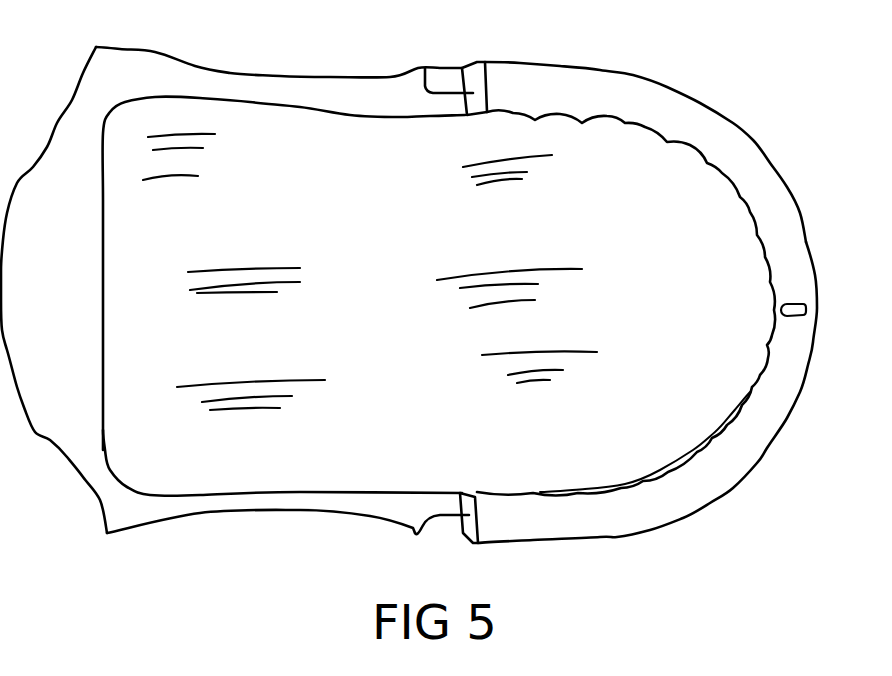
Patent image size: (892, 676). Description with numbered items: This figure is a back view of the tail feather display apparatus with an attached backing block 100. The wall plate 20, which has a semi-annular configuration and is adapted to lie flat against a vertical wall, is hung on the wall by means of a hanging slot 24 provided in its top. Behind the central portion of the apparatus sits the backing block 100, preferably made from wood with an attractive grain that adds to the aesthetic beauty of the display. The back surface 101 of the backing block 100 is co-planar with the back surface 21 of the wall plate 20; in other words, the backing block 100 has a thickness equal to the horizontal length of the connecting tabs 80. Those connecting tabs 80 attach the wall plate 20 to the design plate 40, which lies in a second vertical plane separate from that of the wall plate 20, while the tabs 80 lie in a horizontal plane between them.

The wall plate 20 is at (613, 93).
The back surface of wall plate 21 is at (777, 217).
The hanging slot 24 is at (370, 281).
The design plate 40 is at (201, 513).
The connecting tabs 80 is at (428, 68).
The backing block 100 is at (317, 192).
The back surface of backing block 101 is at (697, 200).